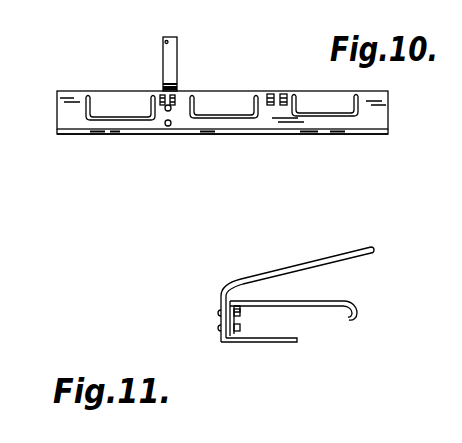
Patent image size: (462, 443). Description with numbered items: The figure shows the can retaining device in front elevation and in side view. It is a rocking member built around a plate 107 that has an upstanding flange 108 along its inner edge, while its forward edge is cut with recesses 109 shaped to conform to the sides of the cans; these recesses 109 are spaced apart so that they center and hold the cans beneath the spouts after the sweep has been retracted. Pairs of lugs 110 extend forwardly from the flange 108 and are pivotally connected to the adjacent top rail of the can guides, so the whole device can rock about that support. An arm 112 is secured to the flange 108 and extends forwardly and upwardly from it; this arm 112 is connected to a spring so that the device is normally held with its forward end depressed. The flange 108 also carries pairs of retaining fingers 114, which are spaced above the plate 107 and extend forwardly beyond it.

In FIG. 10, the plate 107 is at (387, 136).
In FIG. 11, the plate 107 is at (256, 342).
In FIG. 10, the upstanding flange 108 is at (388, 114).
In FIG. 11, the upstanding flange 108 is at (218, 305).
In FIG. 10, the recesses 109 is at (119, 134).
In FIG. 10, the lugs 110 is at (162, 95).
In FIG. 11, the lugs 110 is at (237, 300).
In FIG. 10, the arm 112 is at (173, 55).
In FIG. 11, the arm 112 is at (310, 263).
In FIG. 10, the retaining fingers 114 is at (150, 103).
In FIG. 11, the retaining fingers 114 is at (303, 301).